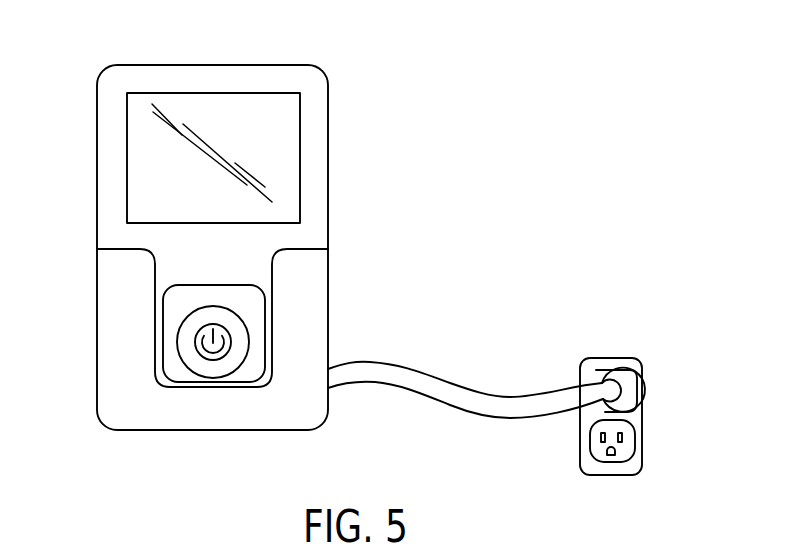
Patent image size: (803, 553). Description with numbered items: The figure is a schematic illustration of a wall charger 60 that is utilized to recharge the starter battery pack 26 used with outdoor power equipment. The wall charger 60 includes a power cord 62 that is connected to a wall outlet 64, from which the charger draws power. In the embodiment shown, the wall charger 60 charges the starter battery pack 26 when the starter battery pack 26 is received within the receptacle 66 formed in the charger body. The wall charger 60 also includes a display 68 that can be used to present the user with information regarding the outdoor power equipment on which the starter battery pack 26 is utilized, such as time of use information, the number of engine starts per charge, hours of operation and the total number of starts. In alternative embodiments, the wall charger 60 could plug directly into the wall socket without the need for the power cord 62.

The wall charger 60 is at (327, 165).
The display 68 is at (244, 118).
The receptacle 66 is at (157, 342).
The starter battery pack 26 is at (267, 332).
The power cord 62 is at (410, 378).
The wall outlet 64 is at (642, 412).